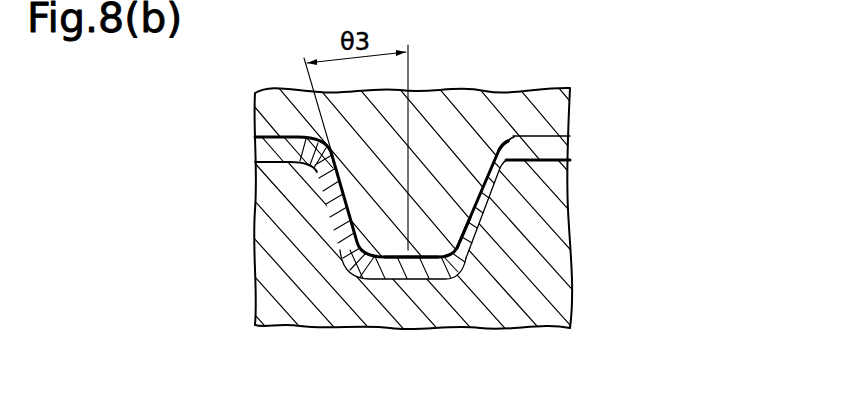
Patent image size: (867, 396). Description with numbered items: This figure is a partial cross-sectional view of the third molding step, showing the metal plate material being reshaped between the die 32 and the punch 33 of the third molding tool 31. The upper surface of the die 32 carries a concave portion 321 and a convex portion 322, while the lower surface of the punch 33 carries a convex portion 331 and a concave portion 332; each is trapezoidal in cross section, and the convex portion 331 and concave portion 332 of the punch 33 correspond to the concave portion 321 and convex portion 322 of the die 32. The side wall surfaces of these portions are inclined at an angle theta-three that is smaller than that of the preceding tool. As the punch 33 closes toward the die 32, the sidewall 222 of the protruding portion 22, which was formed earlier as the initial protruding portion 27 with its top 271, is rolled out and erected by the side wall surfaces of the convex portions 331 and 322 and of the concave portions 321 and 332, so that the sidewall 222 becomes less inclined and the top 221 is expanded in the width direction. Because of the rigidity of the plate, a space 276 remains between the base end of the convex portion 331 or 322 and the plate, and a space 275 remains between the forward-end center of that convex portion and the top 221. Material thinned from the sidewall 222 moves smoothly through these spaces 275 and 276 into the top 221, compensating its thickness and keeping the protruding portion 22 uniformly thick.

The third molding tool 31 is at (418, 207).
The die 32 is at (411, 242).
The punch 33 is at (567, 117).
The concave portion 321 is at (405, 282).
The convex portion 322 is at (258, 165).
The convex portion 331 is at (471, 246).
The concave portion 332 is at (543, 135).
The protruding portion 22 is at (387, 233).
The initial protruding portion 27 is at (412, 215).
The top 221 is at (421, 308).
The top 271 is at (388, 282).
The sidewall 222 is at (346, 216).
The space 275 is at (470, 220).
The space 276 is at (493, 141).